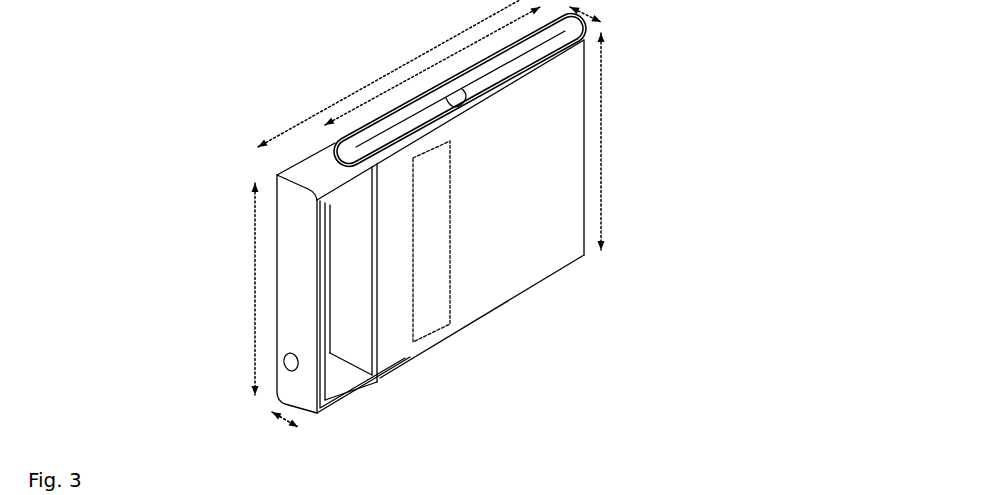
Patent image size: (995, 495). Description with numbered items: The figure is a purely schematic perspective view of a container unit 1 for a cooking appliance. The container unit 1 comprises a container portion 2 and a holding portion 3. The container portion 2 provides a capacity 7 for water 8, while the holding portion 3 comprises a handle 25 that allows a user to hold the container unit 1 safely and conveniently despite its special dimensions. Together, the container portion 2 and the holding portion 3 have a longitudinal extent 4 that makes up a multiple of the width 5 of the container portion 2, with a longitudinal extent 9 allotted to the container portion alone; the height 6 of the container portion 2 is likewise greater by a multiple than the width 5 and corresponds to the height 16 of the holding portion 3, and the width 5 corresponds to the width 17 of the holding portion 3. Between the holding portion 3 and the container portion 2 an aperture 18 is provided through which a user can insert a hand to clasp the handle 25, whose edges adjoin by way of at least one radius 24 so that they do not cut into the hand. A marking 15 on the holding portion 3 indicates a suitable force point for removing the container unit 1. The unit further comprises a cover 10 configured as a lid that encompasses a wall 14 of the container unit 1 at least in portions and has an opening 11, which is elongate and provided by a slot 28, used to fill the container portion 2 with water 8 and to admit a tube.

The container unit 1 is at (153, 47).
The container portion 2 is at (545, 297).
The holding portion 3 is at (368, 404).
The longitudinal extent 4 is at (296, 125).
The width 5 is at (606, 22).
The height 6 is at (602, 177).
The capacity 7 is at (420, 317).
The water 8 is at (440, 303).
The longitudinal extent of the container portion 9 is at (460, 52).
The cover 10 is at (520, 47).
The opening 11 is at (473, 92).
The wall 14 is at (538, 232).
The marking 15 is at (287, 357).
The height of the holding portion 16 is at (255, 222).
The width of the holding portion 17 is at (285, 422).
The aperture 18 is at (340, 370).
The radius 24 is at (316, 415).
The handle 25 is at (295, 287).
The slot 28 is at (463, 97).